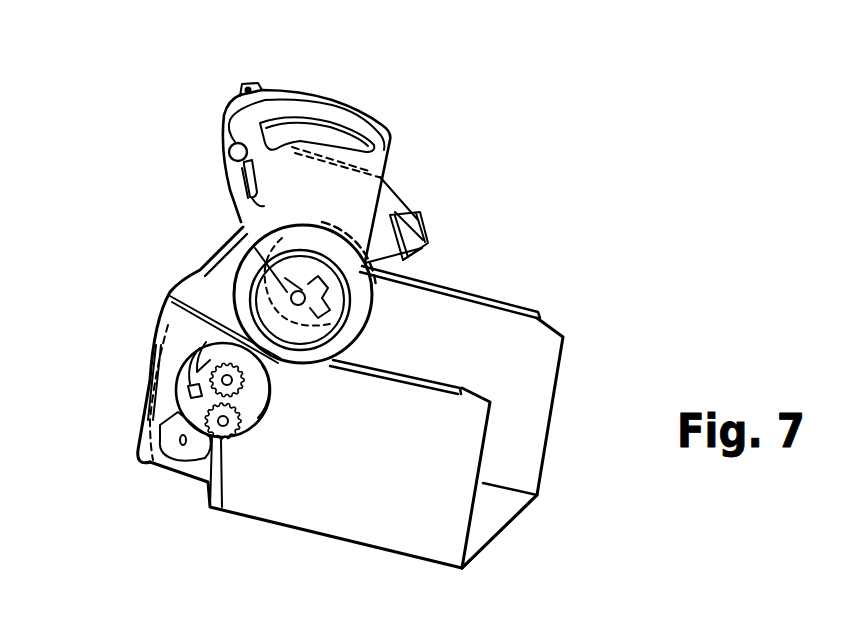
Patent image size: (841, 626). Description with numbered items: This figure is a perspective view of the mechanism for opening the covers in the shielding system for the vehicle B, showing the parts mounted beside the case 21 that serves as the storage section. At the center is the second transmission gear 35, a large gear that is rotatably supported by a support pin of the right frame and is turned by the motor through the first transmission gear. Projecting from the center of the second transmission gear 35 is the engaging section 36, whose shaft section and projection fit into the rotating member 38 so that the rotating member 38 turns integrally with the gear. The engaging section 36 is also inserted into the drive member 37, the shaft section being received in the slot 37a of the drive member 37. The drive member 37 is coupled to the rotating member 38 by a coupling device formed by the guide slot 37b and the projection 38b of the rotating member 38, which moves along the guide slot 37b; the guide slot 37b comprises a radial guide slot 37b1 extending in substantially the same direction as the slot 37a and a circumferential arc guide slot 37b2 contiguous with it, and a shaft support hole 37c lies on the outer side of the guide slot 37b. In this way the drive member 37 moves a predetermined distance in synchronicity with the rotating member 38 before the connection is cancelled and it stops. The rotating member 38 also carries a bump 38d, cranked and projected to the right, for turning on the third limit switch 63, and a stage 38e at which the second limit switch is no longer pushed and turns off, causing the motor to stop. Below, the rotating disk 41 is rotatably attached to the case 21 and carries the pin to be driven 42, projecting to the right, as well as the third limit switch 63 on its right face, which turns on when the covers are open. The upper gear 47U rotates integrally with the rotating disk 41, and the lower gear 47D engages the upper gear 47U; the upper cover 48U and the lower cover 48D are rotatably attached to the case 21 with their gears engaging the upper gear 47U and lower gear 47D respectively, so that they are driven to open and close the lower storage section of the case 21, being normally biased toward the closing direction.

The case 21 is at (350, 520).
The second transmission gear 35 is at (352, 330).
The engaging section 36 is at (330, 297).
The drive member 37 is at (390, 130).
The slot 37a is at (252, 247).
The guide slot 37b is at (300, 118).
The radial guide slot 37b1 is at (250, 178).
The circumferential guide slot 37b2 is at (335, 118).
The shaft support hole 37c is at (247, 84).
The rotating member 38 is at (382, 200).
The projection 38b is at (229, 152).
The bump 38d is at (410, 213).
The stage 38e is at (422, 230).
The rotating disk 41 is at (261, 413).
The pin to be driven 42 is at (272, 396).
The upper gear 47U is at (223, 358).
The lower gear 47D is at (212, 507).
The upper cover 48U is at (165, 310).
The lower cover 48D is at (140, 450).
The third limit switch 63 is at (196, 394).
The vehicle B is at (505, 538).